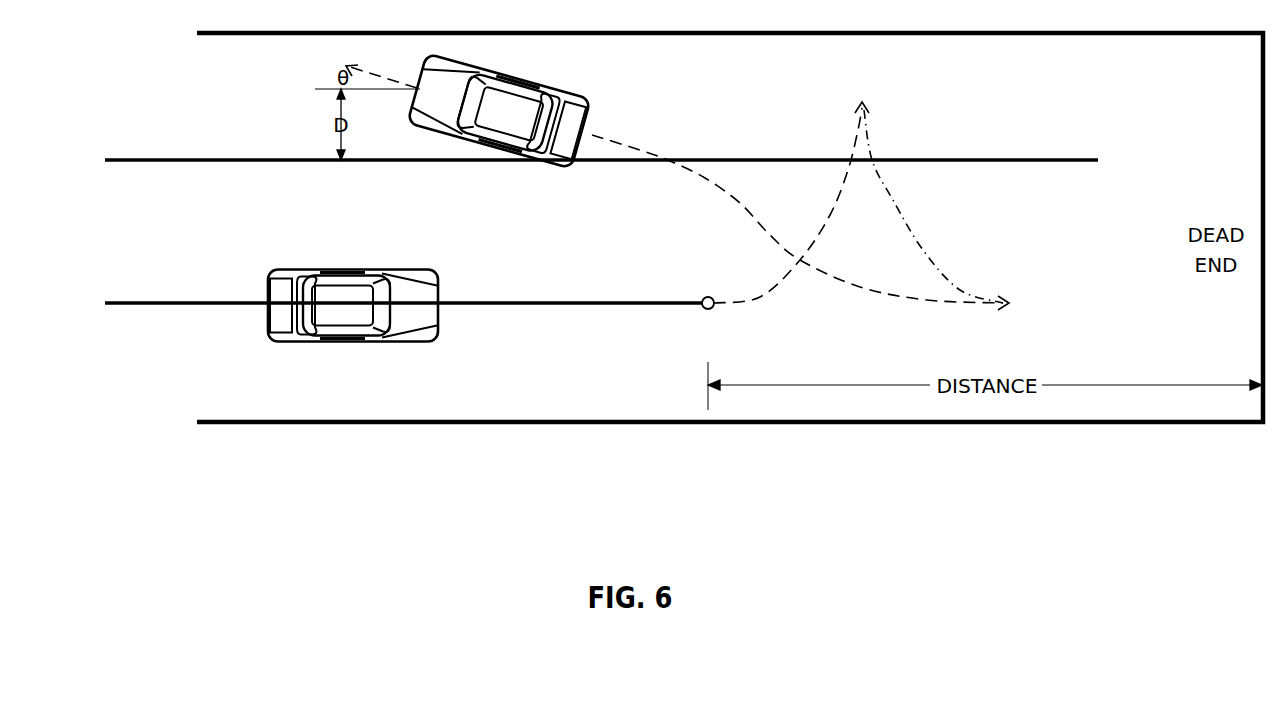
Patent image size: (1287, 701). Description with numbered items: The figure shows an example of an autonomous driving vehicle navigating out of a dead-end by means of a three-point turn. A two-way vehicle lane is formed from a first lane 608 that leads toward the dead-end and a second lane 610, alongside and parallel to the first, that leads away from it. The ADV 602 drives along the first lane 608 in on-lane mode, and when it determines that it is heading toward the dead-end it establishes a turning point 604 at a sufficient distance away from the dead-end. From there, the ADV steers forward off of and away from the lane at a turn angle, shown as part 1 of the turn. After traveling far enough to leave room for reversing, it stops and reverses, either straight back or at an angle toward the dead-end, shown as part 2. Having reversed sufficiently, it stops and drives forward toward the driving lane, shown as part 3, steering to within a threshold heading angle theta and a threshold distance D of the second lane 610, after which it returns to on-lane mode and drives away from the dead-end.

The ADV 602 is at (435, 337).
The turning point 604 is at (702, 298).
The first lane 608 is at (404, 306).
The second lane 610 is at (601, 167).
The part one of the three-point turn 1 is at (791, 210).
The part two of the three-point turn 2 is at (936, 210).
The part three of the three-point turn 3 is at (797, 219).